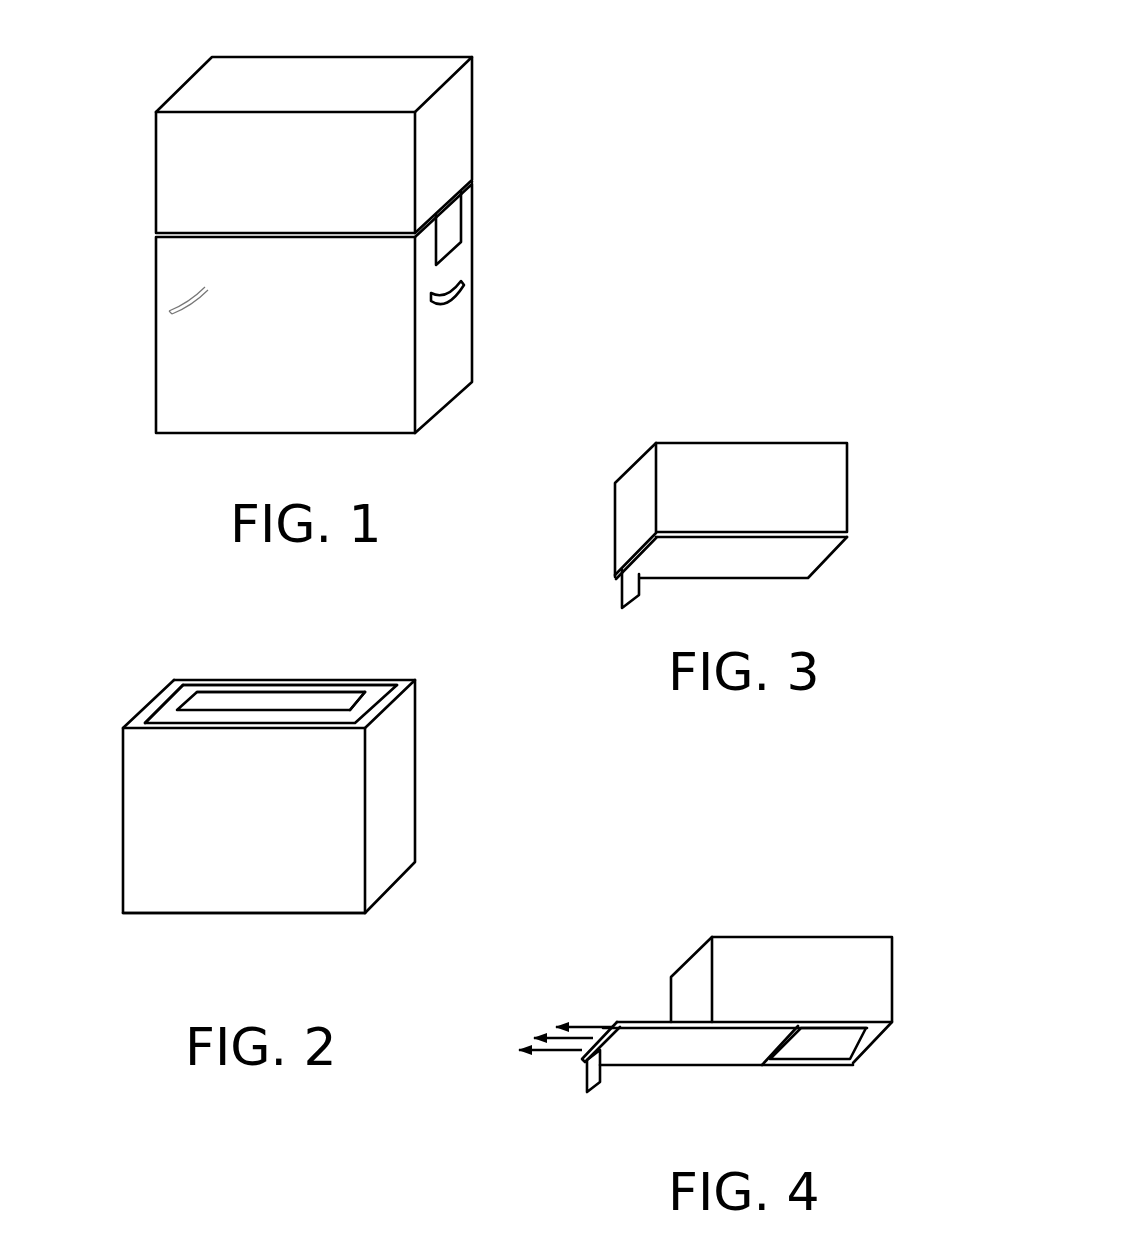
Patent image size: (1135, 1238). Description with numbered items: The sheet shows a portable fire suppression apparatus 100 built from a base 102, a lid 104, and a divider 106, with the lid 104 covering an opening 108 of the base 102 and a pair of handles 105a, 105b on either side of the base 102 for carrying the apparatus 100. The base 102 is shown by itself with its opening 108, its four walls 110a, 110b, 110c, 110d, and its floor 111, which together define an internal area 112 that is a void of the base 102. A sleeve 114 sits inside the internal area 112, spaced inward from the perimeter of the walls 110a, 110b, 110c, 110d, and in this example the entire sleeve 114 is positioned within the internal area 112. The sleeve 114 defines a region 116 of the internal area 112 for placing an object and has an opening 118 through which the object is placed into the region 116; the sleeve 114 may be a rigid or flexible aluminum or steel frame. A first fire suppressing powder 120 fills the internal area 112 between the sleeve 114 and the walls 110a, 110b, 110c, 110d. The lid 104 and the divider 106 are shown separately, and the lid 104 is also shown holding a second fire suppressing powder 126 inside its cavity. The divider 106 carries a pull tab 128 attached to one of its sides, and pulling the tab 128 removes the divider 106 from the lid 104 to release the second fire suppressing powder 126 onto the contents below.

In FIG. 1, the fire suppression apparatus 100 is at (329, 223).
In FIG. 1, the base 102 is at (448, 350).
In FIG. 2, the base 102 is at (299, 773).
In FIG. 1, the lid 104 is at (455, 125).
In FIG. 3, the lid 104 is at (753, 475).
In FIG. 4, the lid 104 is at (793, 953).
In FIG. 1, the handle 105a is at (187, 302).
In FIG. 1, the handle 105b is at (468, 285).
In FIG. 1, the divider 106 is at (463, 221).
In FIG. 3, the divider 106 is at (730, 572).
In FIG. 4, the divider 106 is at (667, 1077).
In FIG. 2, the opening 108 is at (336, 655).
In FIG. 2, the wall 110a is at (275, 895).
In FIG. 2, the wall 110b is at (418, 850).
In FIG. 2, the wall 110c is at (352, 677).
In FIG. 2, the wall 110d is at (137, 708).
In FIG. 2, the floor 111 is at (148, 920).
In FIG. 2, the internal area 112 is at (235, 680).
In FIG. 2, the sleeve 114 is at (195, 688).
In FIG. 2, the region 116 is at (331, 668).
In FIG. 2, the opening 118 is at (362, 698).
In FIG. 2, the first fire suppressing powder 120 is at (377, 688).
In FIG. 4, the second fire suppressing powder 126 is at (825, 1043).
In FIG. 3, the tab 128 is at (625, 595).
In FIG. 4, the tab 128 is at (588, 1078).